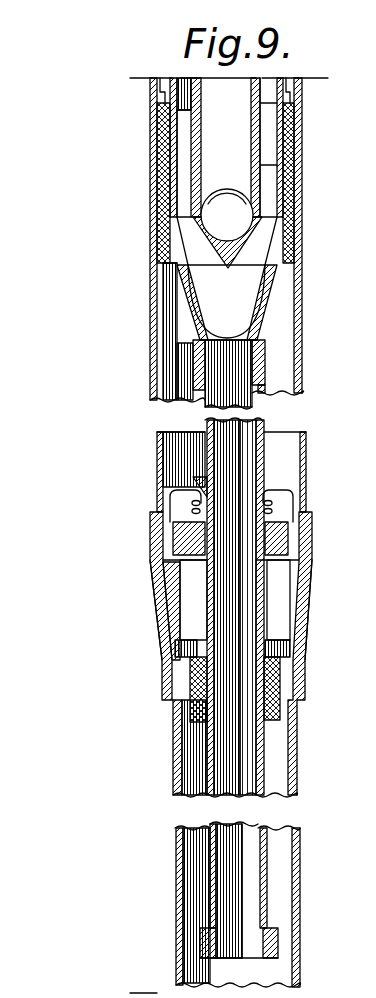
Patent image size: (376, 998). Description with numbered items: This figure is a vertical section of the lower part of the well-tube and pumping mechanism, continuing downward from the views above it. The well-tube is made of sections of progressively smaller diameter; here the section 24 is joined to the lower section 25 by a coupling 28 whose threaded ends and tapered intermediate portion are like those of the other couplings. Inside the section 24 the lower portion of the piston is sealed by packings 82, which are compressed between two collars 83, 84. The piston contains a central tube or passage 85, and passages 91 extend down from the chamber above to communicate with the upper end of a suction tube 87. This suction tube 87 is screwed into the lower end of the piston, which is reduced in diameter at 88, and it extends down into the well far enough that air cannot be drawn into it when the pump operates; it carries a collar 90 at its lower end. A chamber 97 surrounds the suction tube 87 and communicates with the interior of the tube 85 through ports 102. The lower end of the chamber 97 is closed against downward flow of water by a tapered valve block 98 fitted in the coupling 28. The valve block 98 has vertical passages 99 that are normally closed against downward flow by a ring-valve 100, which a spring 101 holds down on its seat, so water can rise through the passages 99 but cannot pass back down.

The well-tube section 24 is at (303, 380).
The well-tube section 25 is at (297, 797).
The coupling 28 is at (303, 613).
The packings 82 is at (297, 142).
The collar 83 is at (297, 238).
The collar 84 is at (293, 261).
The central tube or passage 85 is at (260, 163).
The suction tube 87 is at (258, 394).
The reduced lower end of piston 88 is at (267, 348).
The collar 90 is at (278, 940).
The passages 91 is at (186, 186).
The chamber 97 is at (282, 308).
The tapered valve block 98 is at (298, 632).
The vertical passages 99 is at (190, 620).
The ring-valve 100 is at (287, 533).
The spring 101 is at (273, 508).
The ports 102 is at (225, 221).